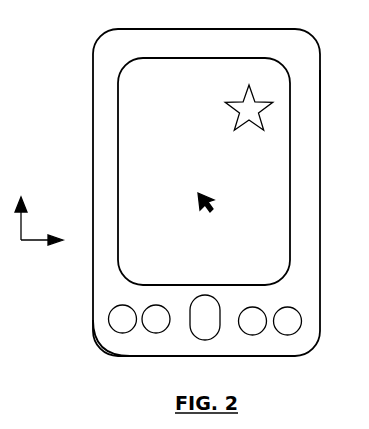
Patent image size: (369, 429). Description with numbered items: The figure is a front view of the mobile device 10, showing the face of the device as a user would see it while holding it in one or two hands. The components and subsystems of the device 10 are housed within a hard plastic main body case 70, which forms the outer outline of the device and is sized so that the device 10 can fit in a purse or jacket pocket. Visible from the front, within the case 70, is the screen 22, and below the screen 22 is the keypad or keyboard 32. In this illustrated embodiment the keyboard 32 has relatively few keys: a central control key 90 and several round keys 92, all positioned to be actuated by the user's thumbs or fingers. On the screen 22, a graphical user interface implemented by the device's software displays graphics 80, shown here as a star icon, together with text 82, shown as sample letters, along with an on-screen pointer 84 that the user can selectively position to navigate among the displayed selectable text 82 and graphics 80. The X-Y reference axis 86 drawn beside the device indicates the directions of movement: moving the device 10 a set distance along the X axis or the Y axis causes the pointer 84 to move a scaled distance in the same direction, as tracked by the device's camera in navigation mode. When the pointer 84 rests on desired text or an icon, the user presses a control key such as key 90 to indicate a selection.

The mobile device 10 is at (93, 97).
The screen 22 is at (133, 136).
The keyboard 32 is at (138, 343).
The main body case 70 is at (320, 88).
The graphics 80 is at (237, 108).
The text 82 is at (198, 160).
The pointer 84 is at (208, 208).
The X-Y reference axis 86 is at (20, 222).
The key 90 is at (205, 341).
The keys 92 is at (158, 306).